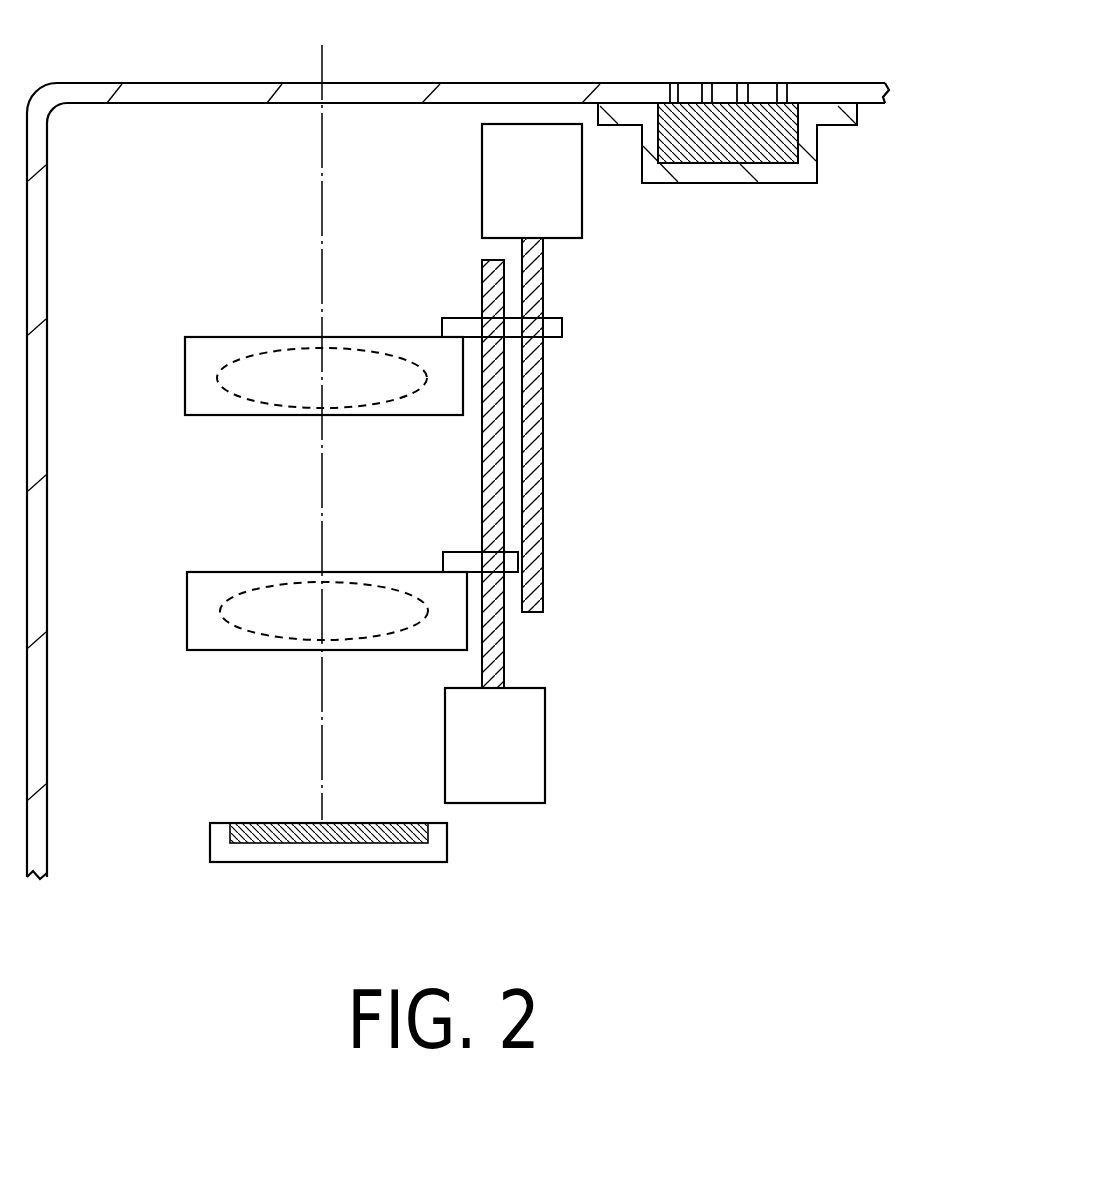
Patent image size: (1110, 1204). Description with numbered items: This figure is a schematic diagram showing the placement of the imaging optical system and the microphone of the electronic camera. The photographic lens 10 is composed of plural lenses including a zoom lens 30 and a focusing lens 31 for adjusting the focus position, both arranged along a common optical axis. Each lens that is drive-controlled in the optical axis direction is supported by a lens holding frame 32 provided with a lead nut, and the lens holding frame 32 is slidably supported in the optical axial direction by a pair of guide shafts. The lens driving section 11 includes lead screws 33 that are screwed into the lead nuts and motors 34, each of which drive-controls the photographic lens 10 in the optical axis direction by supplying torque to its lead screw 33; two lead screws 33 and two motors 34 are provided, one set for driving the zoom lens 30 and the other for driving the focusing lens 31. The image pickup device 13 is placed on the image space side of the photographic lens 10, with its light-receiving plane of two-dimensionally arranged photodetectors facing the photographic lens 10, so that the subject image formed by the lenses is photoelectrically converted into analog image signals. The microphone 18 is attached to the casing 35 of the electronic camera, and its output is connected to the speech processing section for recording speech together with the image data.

The photographic lens 10 is at (278, 544).
The lens driving section 11 is at (467, 463).
The image pickup device 13 is at (447, 845).
The microphone 18 is at (737, 142).
The zoom lens 30 is at (245, 410).
The focusing lens 31 is at (252, 648).
The lens holding frame 32 is at (367, 337).
The lead screw 33 is at (543, 502).
The motor 34 is at (582, 213).
The casing 35 is at (793, 83).